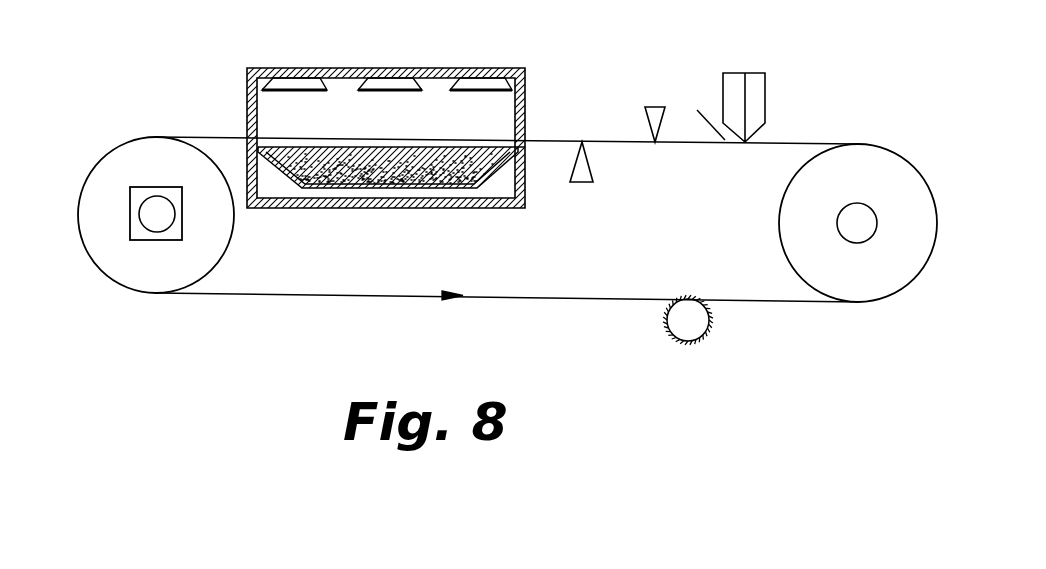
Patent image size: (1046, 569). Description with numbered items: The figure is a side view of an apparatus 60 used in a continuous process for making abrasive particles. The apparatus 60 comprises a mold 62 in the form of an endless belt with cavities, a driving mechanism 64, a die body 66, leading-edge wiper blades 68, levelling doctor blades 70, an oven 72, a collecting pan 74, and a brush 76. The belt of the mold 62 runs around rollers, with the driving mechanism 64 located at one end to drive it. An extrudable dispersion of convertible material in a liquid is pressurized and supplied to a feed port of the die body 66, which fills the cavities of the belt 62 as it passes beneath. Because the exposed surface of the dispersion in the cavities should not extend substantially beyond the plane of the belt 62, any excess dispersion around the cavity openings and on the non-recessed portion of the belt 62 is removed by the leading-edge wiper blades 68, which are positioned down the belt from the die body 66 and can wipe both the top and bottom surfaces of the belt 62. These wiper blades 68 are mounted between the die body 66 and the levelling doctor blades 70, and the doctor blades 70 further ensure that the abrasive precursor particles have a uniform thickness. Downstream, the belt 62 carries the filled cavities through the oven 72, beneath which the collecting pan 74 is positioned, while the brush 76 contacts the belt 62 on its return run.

The apparatus 60 is at (215, 385).
The mold 62 is at (338, 295).
The driving mechanism 64 is at (142, 242).
The die body 66 is at (765, 90).
The leading-edge wiper blades 68 is at (693, 175).
The levelling doctor blades 70 is at (582, 182).
The oven 72 is at (247, 95).
The collecting pan 74 is at (482, 180).
The brush 76 is at (686, 330).